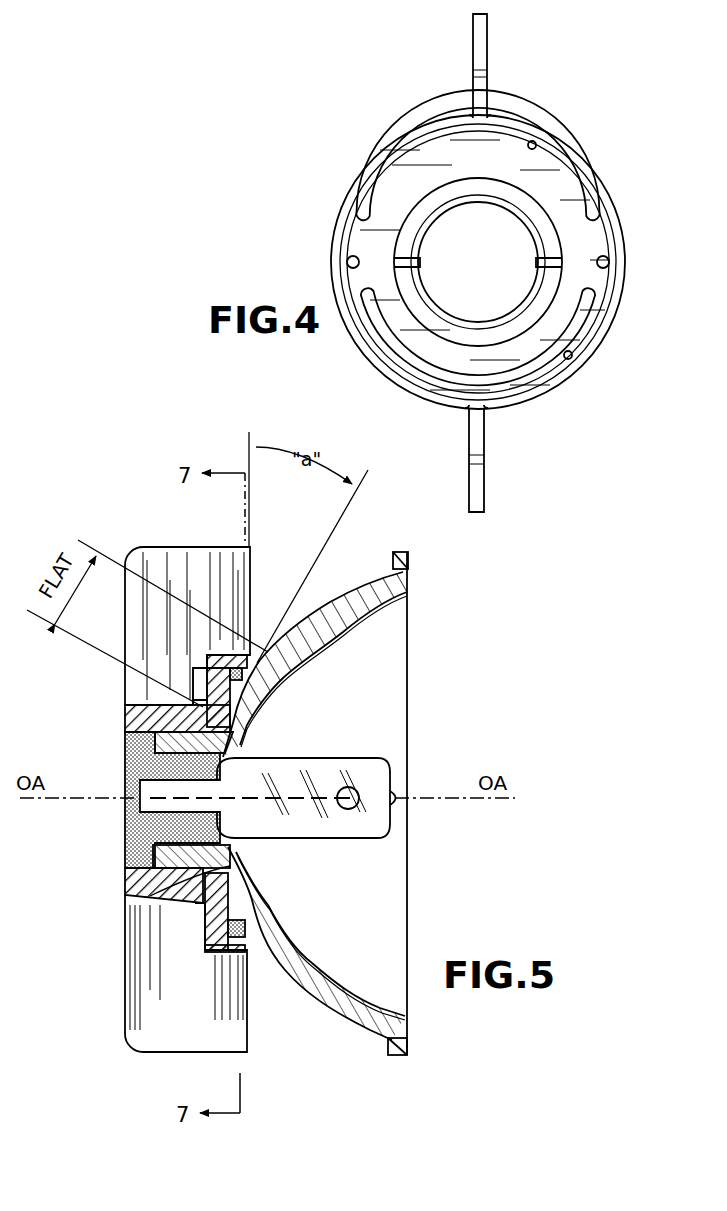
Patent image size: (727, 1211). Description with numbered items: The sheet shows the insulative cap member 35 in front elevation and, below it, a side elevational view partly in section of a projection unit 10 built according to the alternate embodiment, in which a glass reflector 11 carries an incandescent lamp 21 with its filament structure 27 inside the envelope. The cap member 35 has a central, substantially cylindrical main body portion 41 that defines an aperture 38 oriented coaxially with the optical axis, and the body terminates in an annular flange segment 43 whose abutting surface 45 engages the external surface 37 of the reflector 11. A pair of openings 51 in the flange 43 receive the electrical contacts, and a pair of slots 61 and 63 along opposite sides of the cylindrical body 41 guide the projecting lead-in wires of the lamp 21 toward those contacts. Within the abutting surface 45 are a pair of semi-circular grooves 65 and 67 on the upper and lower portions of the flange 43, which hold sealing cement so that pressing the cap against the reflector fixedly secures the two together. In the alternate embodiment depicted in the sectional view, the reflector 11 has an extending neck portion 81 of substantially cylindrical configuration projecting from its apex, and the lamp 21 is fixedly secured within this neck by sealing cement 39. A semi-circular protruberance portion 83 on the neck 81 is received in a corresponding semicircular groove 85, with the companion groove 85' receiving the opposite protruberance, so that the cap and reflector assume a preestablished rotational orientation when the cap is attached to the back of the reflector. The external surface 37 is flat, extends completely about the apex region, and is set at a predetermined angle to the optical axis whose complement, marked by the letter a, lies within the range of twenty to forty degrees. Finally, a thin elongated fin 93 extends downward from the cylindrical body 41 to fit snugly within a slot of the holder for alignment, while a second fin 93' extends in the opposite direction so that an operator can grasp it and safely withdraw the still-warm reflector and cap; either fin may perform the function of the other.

In FIG. 5, the projection unit 10 is at (436, 683).
In FIG. 5, the glass reflector 11 is at (371, 546).
In FIG. 5, the incandescent lamp 21 is at (380, 729).
In FIG. 5, the filament structure 27 is at (337, 810).
In FIG. 4, the insulative cap member 35 is at (371, 155).
In FIG. 5, the insulative cap member 35 is at (124, 722).
In FIG. 5, the external surface 37 is at (213, 655).
In FIG. 4, the aperture 38 is at (490, 261).
In FIG. 5, the sealing cement 39 is at (138, 829).
In FIG. 5, the main body portion 41 is at (148, 896).
In FIG. 4, the annular flange segment 43 is at (450, 113).
In FIG. 5, the annular flange segment 43 is at (223, 655).
In FIG. 4, the abutting surface 45 is at (572, 158).
In FIG. 5, the abutting surface 45 is at (255, 703).
In FIG. 4, the opening 51 is at (350, 262).
In FIG. 4, the slot 61 is at (540, 264).
In FIG. 4, the slot 63 is at (420, 264).
In FIG. 4, the semi-circular groove 65 is at (534, 142).
In FIG. 5, the semi-circular groove 65 is at (273, 680).
In FIG. 4, the semi-circular groove 67 is at (571, 356).
In FIG. 5, the semi-circular groove 67 is at (236, 923).
In FIG. 5, the extending neck portion 81 is at (140, 707).
In FIG. 5, the semi-circular protruberance portion 83 is at (198, 700).
In FIG. 5, the semicircular channel or groove 85 is at (221, 735).
In FIG. 5, the semicircular channel or groove 85' is at (219, 870).
In FIG. 4, the fin 93 is at (496, 458).
In FIG. 5, the fin 93 is at (165, 973).
In FIG. 4, the fin 93' is at (457, 66).
In FIG. 5, the fin 93' is at (187, 601).